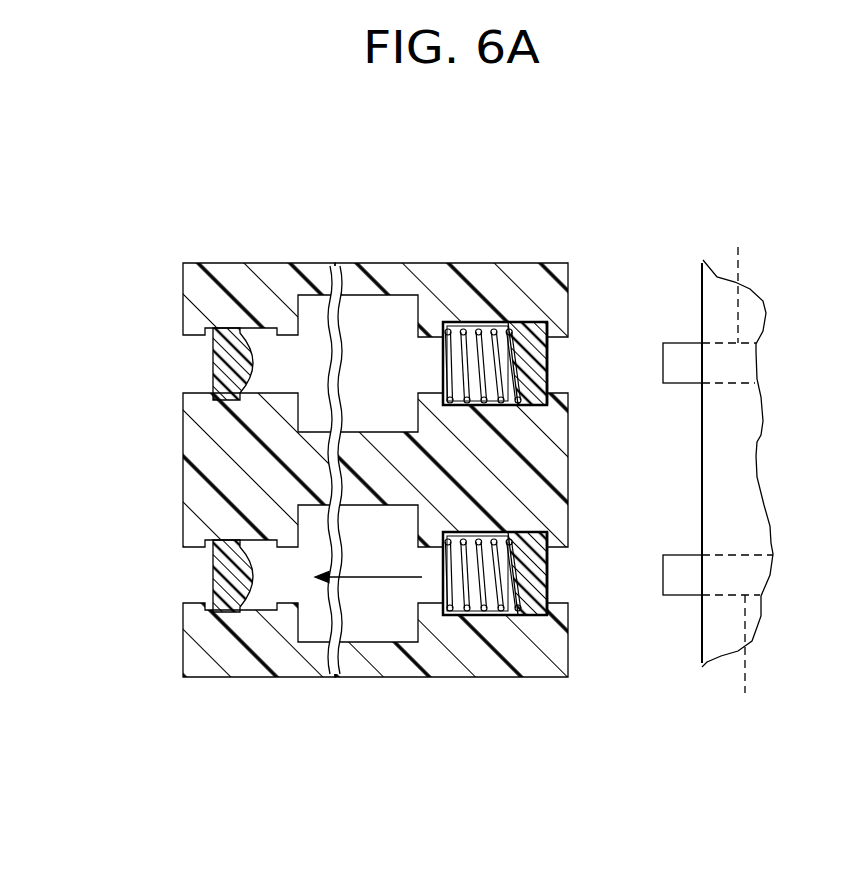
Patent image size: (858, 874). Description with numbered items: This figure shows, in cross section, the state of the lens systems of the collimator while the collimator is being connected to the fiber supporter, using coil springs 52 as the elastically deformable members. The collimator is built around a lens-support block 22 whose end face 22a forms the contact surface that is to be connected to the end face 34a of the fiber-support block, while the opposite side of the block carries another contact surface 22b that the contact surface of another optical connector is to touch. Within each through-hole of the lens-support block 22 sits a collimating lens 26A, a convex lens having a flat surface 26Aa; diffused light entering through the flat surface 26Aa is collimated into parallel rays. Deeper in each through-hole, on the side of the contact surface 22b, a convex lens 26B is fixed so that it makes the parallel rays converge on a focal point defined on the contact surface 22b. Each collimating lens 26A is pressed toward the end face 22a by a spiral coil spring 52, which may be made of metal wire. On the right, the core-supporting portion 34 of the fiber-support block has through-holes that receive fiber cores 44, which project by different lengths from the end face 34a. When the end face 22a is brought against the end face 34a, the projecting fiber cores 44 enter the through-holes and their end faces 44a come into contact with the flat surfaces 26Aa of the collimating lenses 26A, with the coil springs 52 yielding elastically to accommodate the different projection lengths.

The lens-support block 22 is at (362, 549).
The end face 22a is at (568, 475).
The contact surface 22b is at (183, 485).
The collimating lens 26A is at (535, 322).
The flat surface 26Aa is at (547, 365).
The convex lens 26B is at (226, 330).
The coil spring 52 is at (456, 322).
The core-supporting portion 34 is at (710, 662).
The end face 34a is at (700, 432).
The fiber core 44 is at (744, 470).
The end face 44a is at (663, 343).